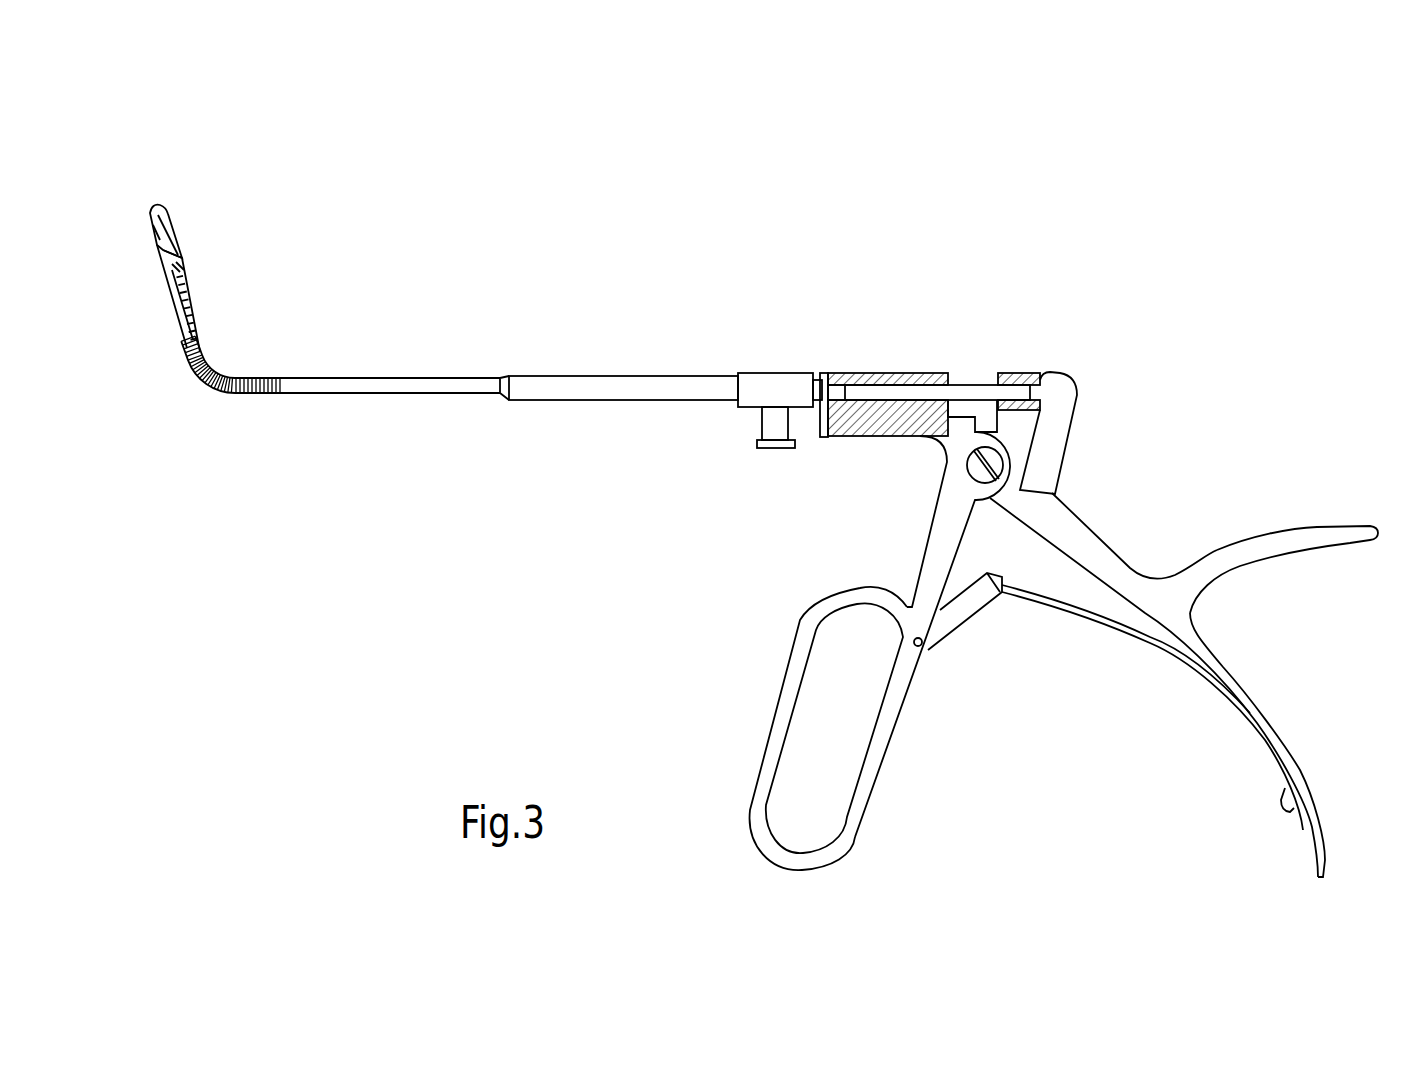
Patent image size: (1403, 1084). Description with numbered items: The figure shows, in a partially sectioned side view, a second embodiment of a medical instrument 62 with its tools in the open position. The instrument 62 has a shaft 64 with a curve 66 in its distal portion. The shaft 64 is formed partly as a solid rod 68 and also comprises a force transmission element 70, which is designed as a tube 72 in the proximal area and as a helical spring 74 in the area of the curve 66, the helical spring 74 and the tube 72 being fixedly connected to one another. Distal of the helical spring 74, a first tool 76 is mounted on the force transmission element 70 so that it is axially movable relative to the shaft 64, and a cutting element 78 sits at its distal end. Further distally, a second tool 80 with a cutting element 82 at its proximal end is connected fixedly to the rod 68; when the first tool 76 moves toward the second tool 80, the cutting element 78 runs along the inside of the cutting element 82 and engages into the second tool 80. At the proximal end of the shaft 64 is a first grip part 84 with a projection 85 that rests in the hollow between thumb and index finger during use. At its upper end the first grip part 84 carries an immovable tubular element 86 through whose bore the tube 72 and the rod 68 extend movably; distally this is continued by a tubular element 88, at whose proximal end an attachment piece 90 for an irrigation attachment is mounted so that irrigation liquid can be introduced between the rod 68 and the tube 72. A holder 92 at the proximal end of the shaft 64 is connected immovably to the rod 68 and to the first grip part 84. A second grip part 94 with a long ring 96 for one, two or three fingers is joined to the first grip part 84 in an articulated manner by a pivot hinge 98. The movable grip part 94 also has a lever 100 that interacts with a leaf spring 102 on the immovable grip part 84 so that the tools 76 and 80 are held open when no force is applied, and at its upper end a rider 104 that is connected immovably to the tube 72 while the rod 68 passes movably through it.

The medical instrument 62 is at (624, 345).
The shaft 64 is at (469, 365).
The curve 66 is at (212, 403).
The rod 68 is at (182, 274).
The force transmission element 70 is at (351, 405).
The tube 72 is at (437, 393).
The helical spring 74 is at (257, 393).
The first tool 76 is at (192, 296).
The cutting element 78 is at (160, 266).
The second tool 80 is at (177, 230).
The cutting element 82 is at (182, 262).
The first grip part 84 is at (1083, 538).
The projection 85 is at (1303, 528).
The tubular element 86 is at (905, 372).
The tubular element 88 is at (705, 373).
The attachment piece 90 is at (763, 421).
The holder 92 is at (1058, 408).
The second grip part 94 is at (928, 568).
The long ring 96 is at (765, 773).
The pivot hinge 98 is at (968, 467).
The lever 100 is at (957, 617).
The leaf spring 102 is at (1152, 640).
The rider 104 is at (1022, 384).